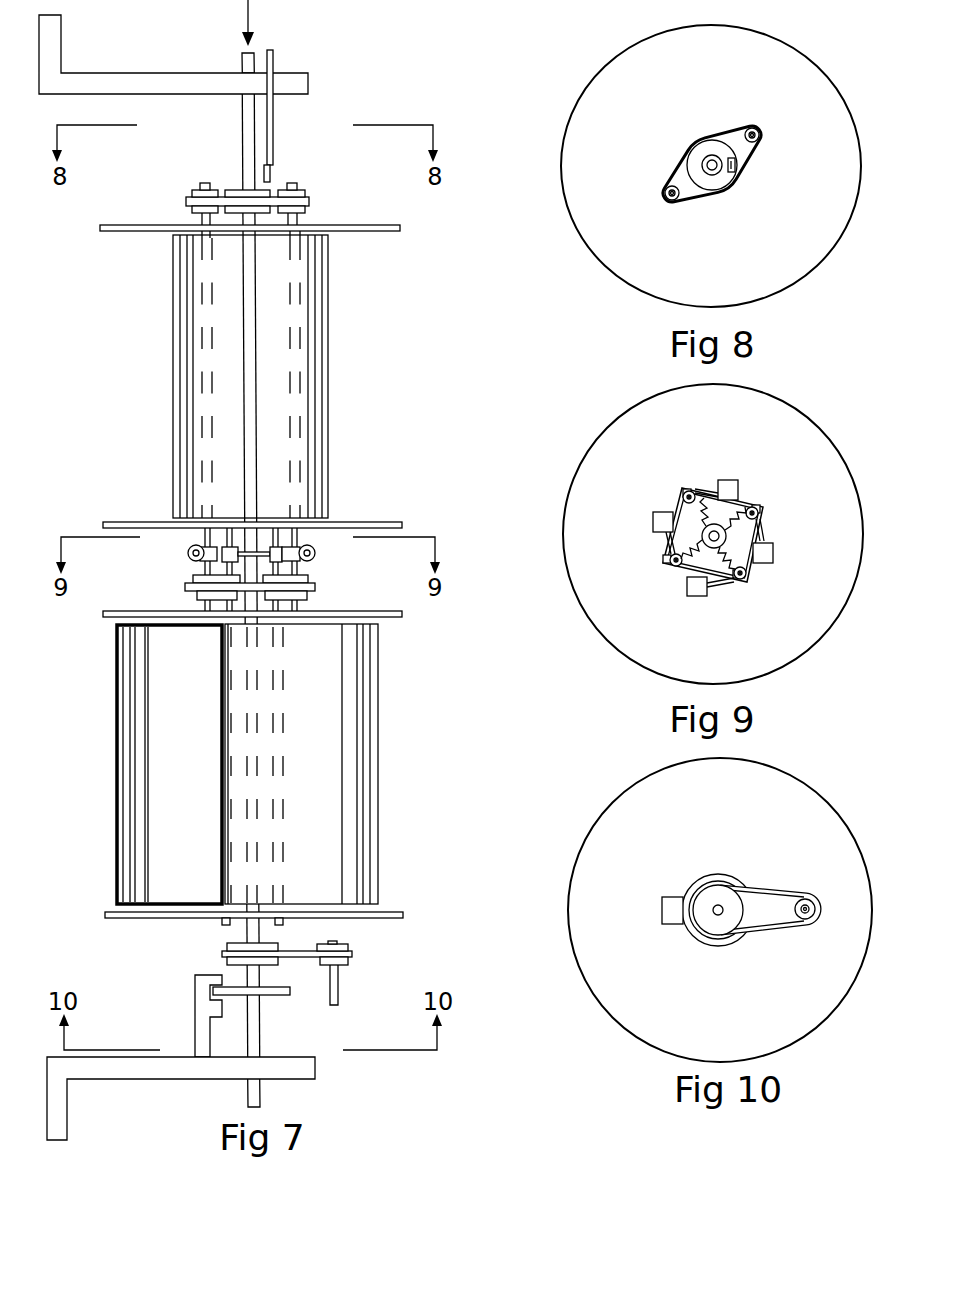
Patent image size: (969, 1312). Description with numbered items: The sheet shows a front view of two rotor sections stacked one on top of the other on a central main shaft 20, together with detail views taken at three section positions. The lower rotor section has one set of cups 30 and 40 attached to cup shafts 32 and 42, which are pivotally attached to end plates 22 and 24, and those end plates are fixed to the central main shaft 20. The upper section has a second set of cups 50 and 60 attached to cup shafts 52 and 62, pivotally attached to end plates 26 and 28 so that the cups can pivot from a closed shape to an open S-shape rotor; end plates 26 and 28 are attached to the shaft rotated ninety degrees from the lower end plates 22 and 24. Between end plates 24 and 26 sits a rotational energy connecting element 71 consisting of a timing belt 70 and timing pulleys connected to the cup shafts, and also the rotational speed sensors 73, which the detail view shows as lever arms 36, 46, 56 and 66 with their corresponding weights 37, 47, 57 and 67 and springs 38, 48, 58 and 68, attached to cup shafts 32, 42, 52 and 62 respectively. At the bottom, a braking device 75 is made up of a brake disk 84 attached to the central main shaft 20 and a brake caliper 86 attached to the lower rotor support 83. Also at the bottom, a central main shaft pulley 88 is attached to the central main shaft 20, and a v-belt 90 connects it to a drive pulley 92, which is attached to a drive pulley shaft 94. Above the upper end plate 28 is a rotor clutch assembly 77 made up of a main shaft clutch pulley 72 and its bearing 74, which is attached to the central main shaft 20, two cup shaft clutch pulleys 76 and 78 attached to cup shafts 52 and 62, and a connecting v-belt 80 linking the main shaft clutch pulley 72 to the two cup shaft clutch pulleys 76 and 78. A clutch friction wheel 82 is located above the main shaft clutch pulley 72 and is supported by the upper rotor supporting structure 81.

In FIG. 7, the central main shaft 20 is at (262, 1096).
In FIG. 8, the central main shaft 20 is at (714, 172).
In FIG. 10, the central main shaft 20 is at (719, 915).
In FIG. 7, the end plate 22 is at (105, 913).
In FIG. 10, the end plate 22 is at (828, 1012).
In FIG. 7, the end plate 24 is at (103, 616).
In FIG. 9, the end plate 24 is at (800, 663).
In FIG. 7, the end plate 26 is at (103, 525).
In FIG. 7, the end plate 28 is at (100, 228).
In FIG. 8, the end plate 28 is at (778, 285).
In FIG. 7, the cup 30 is at (116, 712).
In FIG. 7, the cup shaft 32 is at (222, 922).
In FIG. 9, the cup shaft 32 is at (683, 502).
In FIG. 9, the lever arm 36 is at (686, 488).
In FIG. 7, the weight 37 is at (262, 554).
In FIG. 9, the weight 37 is at (732, 480).
In FIG. 9, the spring 38 is at (704, 496).
In FIG. 7, the cup 40 is at (380, 704).
In FIG. 7, the cup shaft 42 is at (283, 922).
In FIG. 9, the cup shaft 42 is at (747, 573).
In FIG. 9, the lever arm 46 is at (747, 587).
In FIG. 7, the weight 47 is at (230, 561).
In FIG. 9, the weight 47 is at (697, 596).
In FIG. 9, the spring 48 is at (724, 572).
In FIG. 7, the cup 50 is at (173, 327).
In FIG. 7, the cup shaft 52 is at (197, 219).
In FIG. 8, the cup shaft 52 is at (668, 195).
In FIG. 9, the cup shaft 52 is at (670, 570).
In FIG. 9, the lever arm 56 is at (663, 561).
In FIG. 7, the weight 57 is at (189, 553).
In FIG. 9, the weight 57 is at (653, 523).
In FIG. 9, the spring 58 is at (680, 545).
In FIG. 7, the cup 60 is at (328, 327).
In FIG. 7, the cup shaft 62 is at (300, 220).
In FIG. 8, the cup shaft 62 is at (758, 134).
In FIG. 9, the cup shaft 62 is at (758, 507).
In FIG. 9, the lever arm 66 is at (760, 512).
In FIG. 7, the weight 67 is at (316, 555).
In FIG. 9, the weight 67 is at (773, 553).
In FIG. 9, the spring 68 is at (748, 520).
In FIG. 7, the timing belt 70 is at (312, 585).
In FIG. 7, the rotational energy connecting element 71 is at (296, 588).
In FIG. 7, the main shaft clutch pulley 72 is at (236, 190).
In FIG. 8, the main shaft clutch pulley 72 is at (721, 135).
In FIG. 7, the rotational speed sensors 73 is at (228, 569).
In FIG. 9, the rotational speed sensors 73 is at (729, 532).
In FIG. 8, the bearing 74 is at (709, 150).
In FIG. 7, the braking device 75 is at (253, 999).
In FIG. 10, the braking device 75 is at (732, 910).
In FIG. 7, the cup shaft clutch pulley 76 is at (196, 190).
In FIG. 8, the cup shaft clutch pulley 76 is at (676, 184).
In FIG. 7, the rotor clutch assembly 77 is at (236, 190).
In FIG. 8, the rotor clutch assembly 77 is at (709, 168).
In FIG. 7, the cup shaft clutch pulley 78 is at (303, 190).
In FIG. 8, the cup shaft clutch pulley 78 is at (758, 143).
In FIG. 7, the v-belt 80 is at (310, 202).
In FIG. 8, the v-belt 80 is at (700, 200).
In FIG. 7, the upper rotor supporting structure 81 is at (308, 82).
In FIG. 7, the clutch friction wheel 82 is at (274, 143).
In FIG. 8, the clutch friction wheel 82 is at (738, 170).
In FIG. 7, the lower rotor support 83 is at (315, 1068).
In FIG. 7, the brake disk 84 is at (277, 995).
In FIG. 10, the brake disk 84 is at (686, 936).
In FIG. 7, the brake caliper 86 is at (197, 995).
In FIG. 10, the brake caliper 86 is at (662, 906).
In FIG. 7, the central main shaft pulley 88 is at (225, 957).
In FIG. 10, the central main shaft pulley 88 is at (718, 892).
In FIG. 7, the v-belt 90 is at (350, 953).
In FIG. 10, the v-belt 90 is at (770, 890).
In FIG. 7, the drive pulley 92 is at (350, 961).
In FIG. 10, the drive pulley 92 is at (793, 925).
In FIG. 7, the drive pulley shaft 94 is at (339, 988).
In FIG. 10, the drive pulley shaft 94 is at (822, 908).